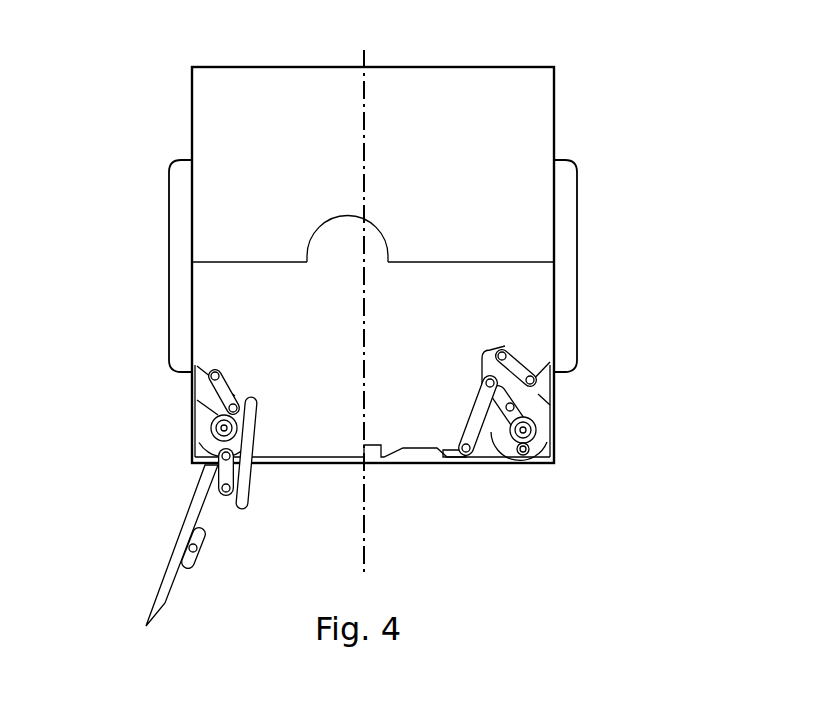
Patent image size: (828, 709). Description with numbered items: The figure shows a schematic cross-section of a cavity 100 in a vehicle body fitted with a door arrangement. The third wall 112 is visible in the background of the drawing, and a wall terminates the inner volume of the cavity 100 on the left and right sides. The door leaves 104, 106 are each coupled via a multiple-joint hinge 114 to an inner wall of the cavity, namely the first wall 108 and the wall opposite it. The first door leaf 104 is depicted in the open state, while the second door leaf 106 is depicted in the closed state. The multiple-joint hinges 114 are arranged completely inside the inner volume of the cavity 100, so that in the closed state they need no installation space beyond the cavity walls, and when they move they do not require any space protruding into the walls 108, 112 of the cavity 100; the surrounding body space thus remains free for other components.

The cavity 100 is at (356, 338).
The first door leaf 104 is at (165, 582).
The second door leaf 106 is at (478, 463).
The first wall 108 is at (178, 232).
The third wall 112 is at (517, 109).
The multiple-joint hinge 114 is at (247, 475).